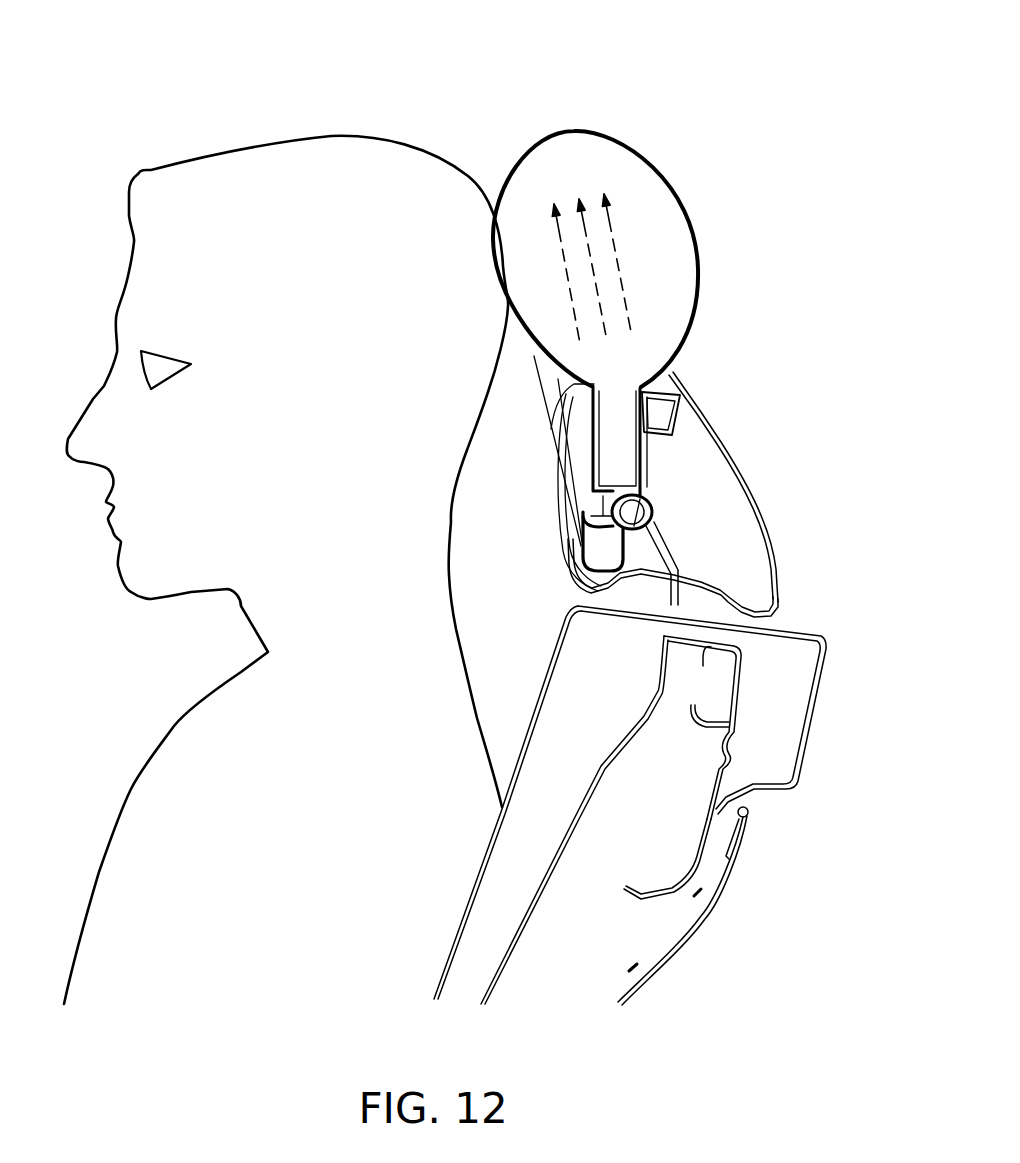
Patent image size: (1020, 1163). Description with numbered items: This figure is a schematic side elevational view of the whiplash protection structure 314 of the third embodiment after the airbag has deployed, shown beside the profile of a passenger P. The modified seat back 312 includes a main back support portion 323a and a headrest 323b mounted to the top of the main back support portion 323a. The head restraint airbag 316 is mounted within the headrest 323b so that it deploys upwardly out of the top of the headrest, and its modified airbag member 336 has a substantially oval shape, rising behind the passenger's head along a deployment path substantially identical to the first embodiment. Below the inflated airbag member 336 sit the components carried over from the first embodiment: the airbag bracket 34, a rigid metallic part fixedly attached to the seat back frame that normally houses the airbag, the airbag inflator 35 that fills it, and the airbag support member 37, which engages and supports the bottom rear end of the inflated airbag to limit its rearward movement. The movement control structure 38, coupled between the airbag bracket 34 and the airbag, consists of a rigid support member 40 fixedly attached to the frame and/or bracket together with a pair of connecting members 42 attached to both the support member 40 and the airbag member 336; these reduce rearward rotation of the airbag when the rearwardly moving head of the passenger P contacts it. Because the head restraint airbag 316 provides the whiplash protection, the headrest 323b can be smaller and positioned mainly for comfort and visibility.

The passenger P is at (262, 103).
The seat back 312 is at (750, 922).
The whiplash protection structure 314 is at (667, 128).
The head restraint airbag 316 is at (672, 458).
The main back support portion 323a is at (766, 737).
The headrest 323b is at (722, 546).
The airbag member 336 is at (677, 195).
The airbag bracket 34 is at (655, 510).
The airbag inflator 35 is at (603, 505).
The airbag support member 37 is at (678, 418).
The movement control structure 38 is at (604, 582).
The support member 40 is at (580, 586).
The connecting members 42 is at (563, 498).